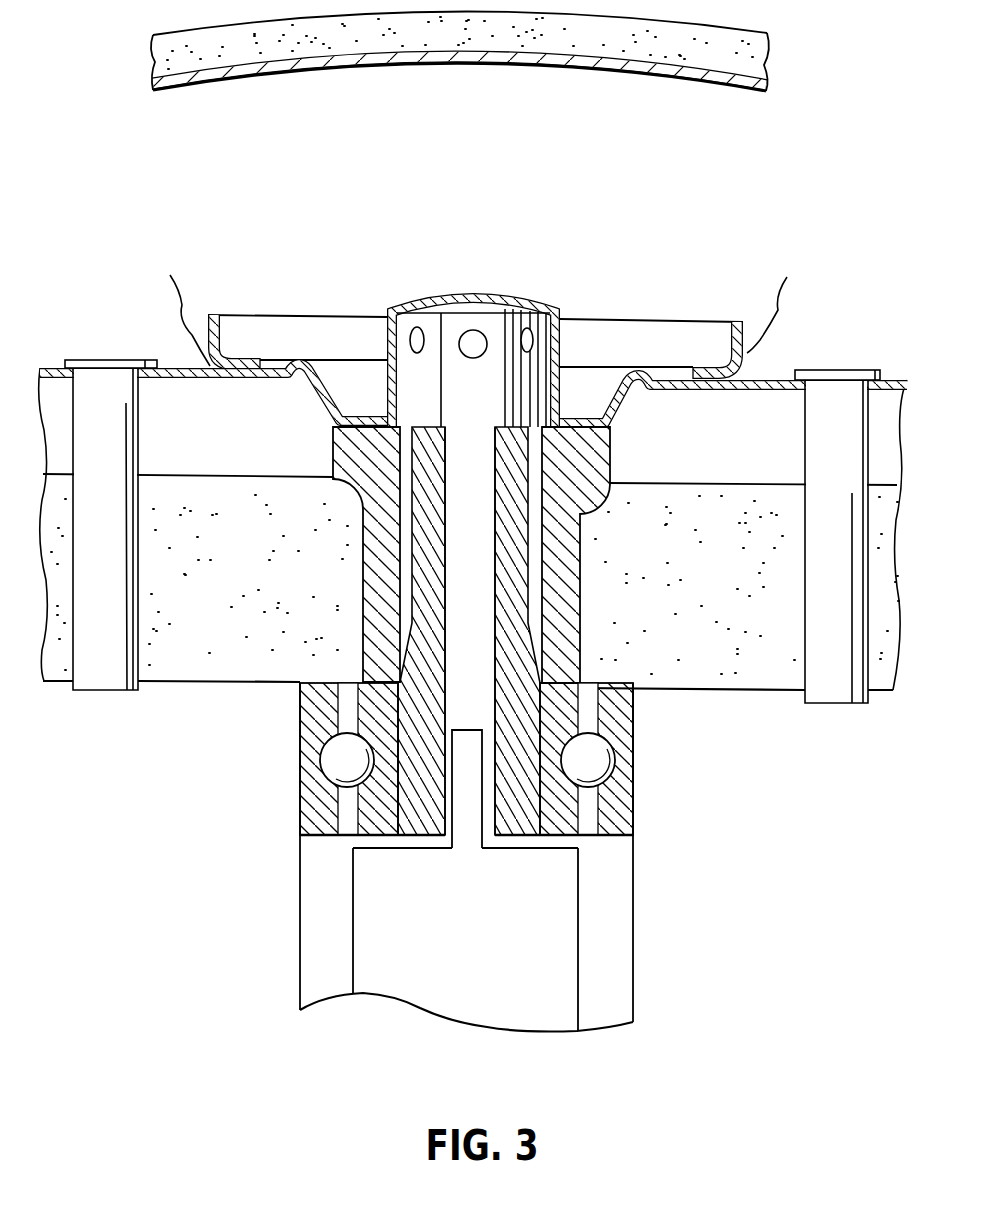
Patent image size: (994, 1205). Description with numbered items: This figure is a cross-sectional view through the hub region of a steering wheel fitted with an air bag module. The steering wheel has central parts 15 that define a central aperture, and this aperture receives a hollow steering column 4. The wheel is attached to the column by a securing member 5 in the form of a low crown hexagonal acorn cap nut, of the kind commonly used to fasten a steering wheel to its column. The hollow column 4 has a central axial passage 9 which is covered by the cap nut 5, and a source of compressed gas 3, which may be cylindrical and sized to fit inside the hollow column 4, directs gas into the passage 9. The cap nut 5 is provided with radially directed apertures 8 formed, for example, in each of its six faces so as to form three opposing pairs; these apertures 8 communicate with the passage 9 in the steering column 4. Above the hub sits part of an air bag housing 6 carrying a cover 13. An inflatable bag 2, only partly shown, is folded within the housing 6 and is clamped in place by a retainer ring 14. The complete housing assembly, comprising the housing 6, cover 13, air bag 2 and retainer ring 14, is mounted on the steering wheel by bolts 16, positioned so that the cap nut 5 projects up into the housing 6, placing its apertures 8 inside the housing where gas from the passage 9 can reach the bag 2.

The inflatable bag 2 is at (184, 295).
The source of compressed gas 3 is at (553, 947).
The hollow steering column 4 is at (520, 798).
The securing member 5 is at (422, 298).
The air bag housing 6 is at (768, 377).
The radially directed apertures 8 is at (417, 353).
The central axial passage 9 is at (477, 532).
The cover 13 is at (593, 78).
The retainer ring 14 is at (733, 347).
The central parts 15 is at (543, 667).
The bolts 16 is at (120, 683).